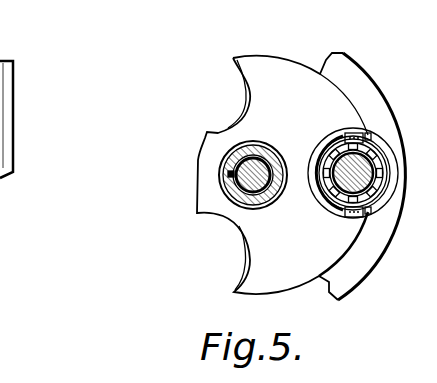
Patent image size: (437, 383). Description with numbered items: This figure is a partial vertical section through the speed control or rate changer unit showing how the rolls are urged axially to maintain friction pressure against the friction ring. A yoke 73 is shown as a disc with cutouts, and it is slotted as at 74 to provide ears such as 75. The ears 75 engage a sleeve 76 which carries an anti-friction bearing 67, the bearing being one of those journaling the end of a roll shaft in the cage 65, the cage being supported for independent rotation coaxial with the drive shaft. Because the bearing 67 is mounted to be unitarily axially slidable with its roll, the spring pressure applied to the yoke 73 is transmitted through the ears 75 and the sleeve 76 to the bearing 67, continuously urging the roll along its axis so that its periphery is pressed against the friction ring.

The cage 65 is at (372, 217).
The anti-friction bearing 67 is at (372, 162).
The yoke 73 is at (262, 270).
The slot 74 is at (345, 212).
The ears 75 is at (368, 136).
The sleeve 76 is at (381, 149).